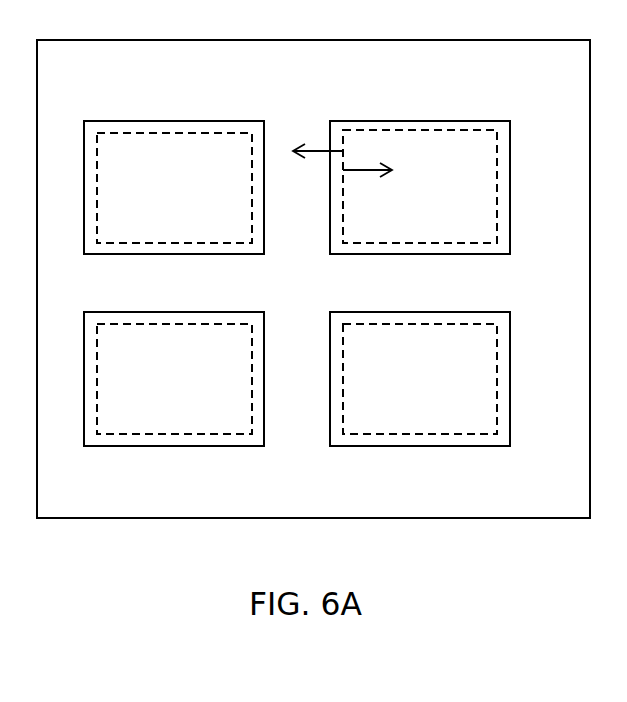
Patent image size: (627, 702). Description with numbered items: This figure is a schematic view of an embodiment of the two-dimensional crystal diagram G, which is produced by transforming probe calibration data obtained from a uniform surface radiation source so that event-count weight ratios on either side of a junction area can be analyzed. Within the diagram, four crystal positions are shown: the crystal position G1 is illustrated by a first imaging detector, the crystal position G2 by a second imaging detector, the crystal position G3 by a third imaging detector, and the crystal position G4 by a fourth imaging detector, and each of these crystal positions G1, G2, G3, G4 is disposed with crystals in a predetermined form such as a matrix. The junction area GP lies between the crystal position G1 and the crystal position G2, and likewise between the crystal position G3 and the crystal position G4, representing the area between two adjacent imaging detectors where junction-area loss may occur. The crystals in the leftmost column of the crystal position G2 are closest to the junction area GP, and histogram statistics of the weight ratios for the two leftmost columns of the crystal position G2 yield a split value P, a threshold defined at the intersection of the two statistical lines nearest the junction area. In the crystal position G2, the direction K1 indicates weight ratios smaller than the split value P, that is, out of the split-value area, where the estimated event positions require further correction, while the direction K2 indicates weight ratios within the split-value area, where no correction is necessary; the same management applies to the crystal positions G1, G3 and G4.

The 2D crystal diagram G is at (329, 40).
The crystal position G1 is at (143, 121).
The crystal position G2 is at (421, 121).
The crystal position G3 is at (143, 312).
The crystal position G4 is at (416, 312).
The junction area GP is at (300, 117).
The split value P is at (347, 185).
The direction K1 is at (314, 166).
The direction K2 is at (371, 184).